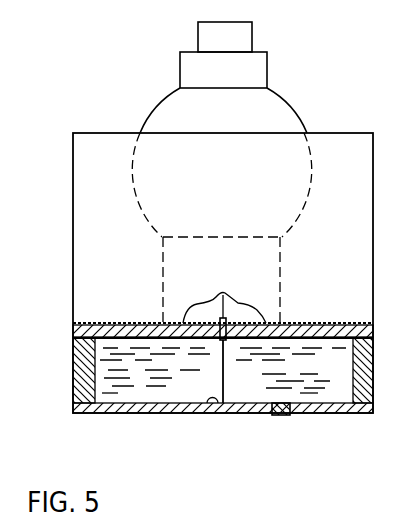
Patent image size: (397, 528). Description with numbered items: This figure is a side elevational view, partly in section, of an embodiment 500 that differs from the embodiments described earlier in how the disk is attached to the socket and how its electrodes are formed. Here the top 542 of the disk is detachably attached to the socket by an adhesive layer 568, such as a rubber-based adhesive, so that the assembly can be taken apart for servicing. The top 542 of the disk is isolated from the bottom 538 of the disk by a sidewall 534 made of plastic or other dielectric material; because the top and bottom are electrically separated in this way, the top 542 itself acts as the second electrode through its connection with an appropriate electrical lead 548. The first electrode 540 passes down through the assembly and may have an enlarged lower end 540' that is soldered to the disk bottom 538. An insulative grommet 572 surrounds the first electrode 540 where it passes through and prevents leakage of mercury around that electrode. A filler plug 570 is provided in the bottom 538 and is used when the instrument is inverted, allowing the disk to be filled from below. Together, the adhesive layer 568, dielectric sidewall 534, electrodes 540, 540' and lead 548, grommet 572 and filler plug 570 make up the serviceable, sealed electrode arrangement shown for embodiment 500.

The embodiment 500 is at (282, 50).
The sidewall 534 is at (76, 381).
The adhesive layer 568 is at (99, 323).
The top of the disk 542 is at (88, 356).
The bottom of the disk 538 is at (110, 413).
The filler plug 570 is at (287, 415).
The insulative grommet 572 is at (196, 321).
The electrical lead 548 is at (246, 313).
The first electrode 540 is at (223, 398).
The enlarged lower end 540' is at (192, 447).